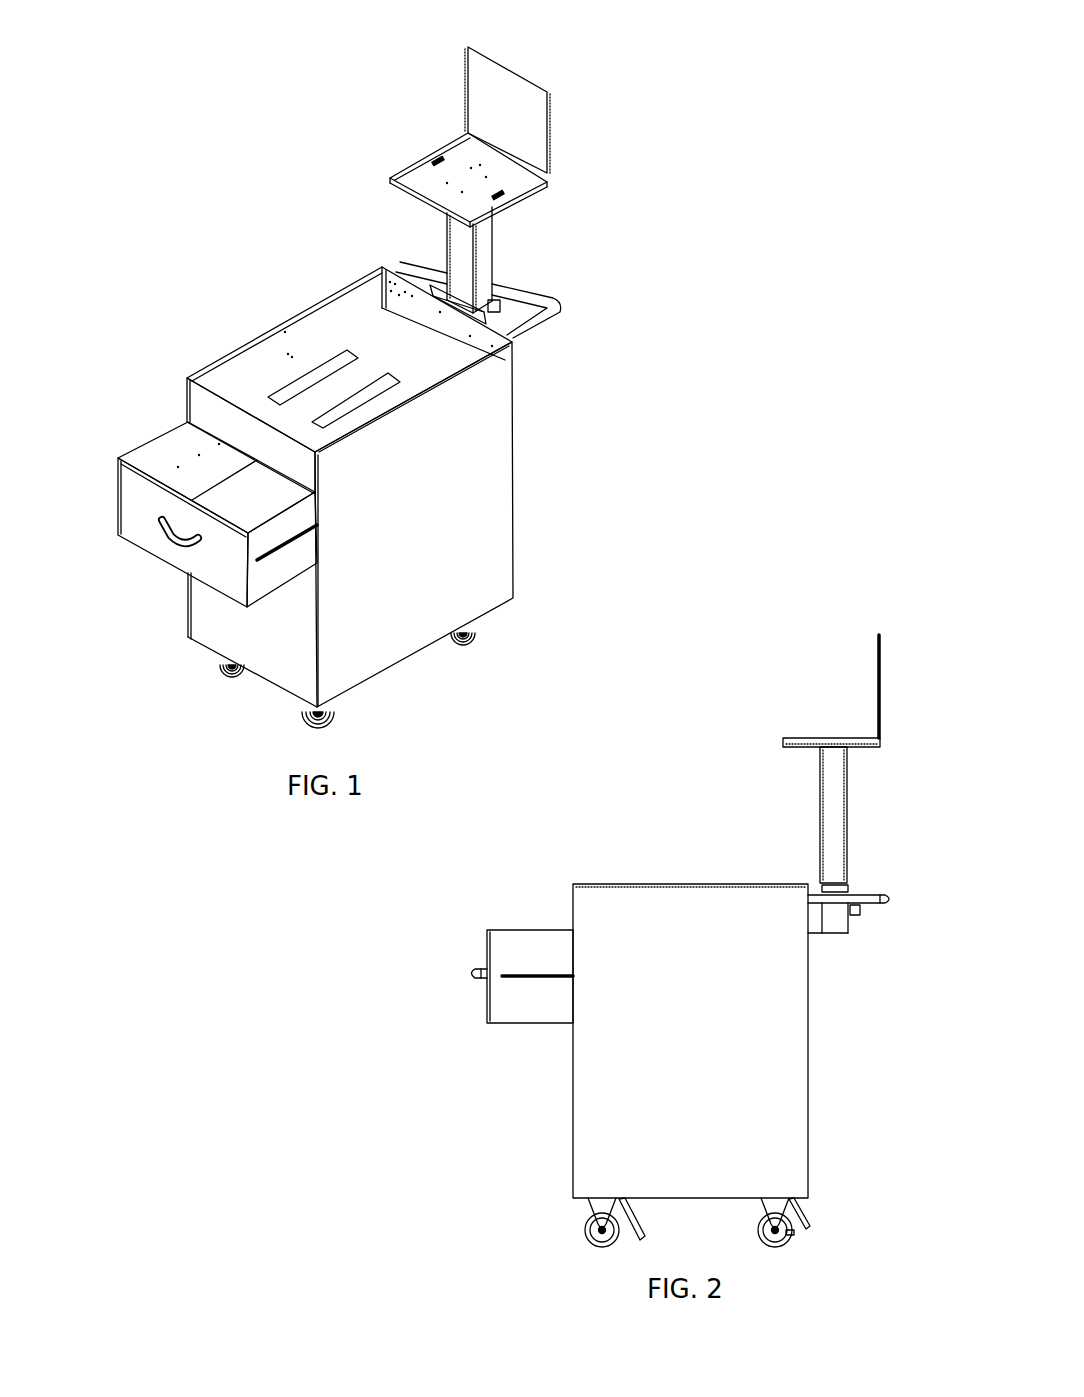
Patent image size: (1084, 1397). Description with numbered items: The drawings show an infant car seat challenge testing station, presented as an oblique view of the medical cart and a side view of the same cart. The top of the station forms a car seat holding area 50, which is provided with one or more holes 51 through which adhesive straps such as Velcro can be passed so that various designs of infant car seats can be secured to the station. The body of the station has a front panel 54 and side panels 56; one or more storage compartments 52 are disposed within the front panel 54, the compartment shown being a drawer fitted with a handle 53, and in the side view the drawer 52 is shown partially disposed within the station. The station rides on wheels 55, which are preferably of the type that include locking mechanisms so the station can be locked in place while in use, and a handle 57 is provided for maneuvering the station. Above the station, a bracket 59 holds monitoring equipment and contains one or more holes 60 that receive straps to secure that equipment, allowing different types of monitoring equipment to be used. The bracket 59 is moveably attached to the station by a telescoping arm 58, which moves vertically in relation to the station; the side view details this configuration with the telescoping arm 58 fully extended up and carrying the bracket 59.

In FIG. 1, the car seat holding area 50 is at (375, 330).
In FIG. 1, the holes 51 is at (288, 396).
In FIG. 1, the storage compartment 52 is at (130, 480).
In FIG. 1, the handle 53 is at (152, 530).
In FIG. 2, the handle 53 is at (468, 973).
In FIG. 1, the front panel 54 is at (220, 607).
In FIG. 1, the wheels 55 is at (222, 672).
In FIG. 2, the wheels 55 is at (590, 1232).
In FIG. 1, the side panels 56 is at (462, 512).
In FIG. 2, the side panels 56 is at (760, 1060).
In FIG. 1, the handle 57 is at (538, 320).
In FIG. 2, the handle 57 is at (892, 897).
In FIG. 1, the telescoping arm 58 is at (485, 247).
In FIG. 2, the telescoping arm 58 is at (850, 802).
In FIG. 1, the bracket 59 is at (502, 78).
In FIG. 2, the bracket 59 is at (880, 698).
In FIG. 1, the holes 60 is at (440, 158).